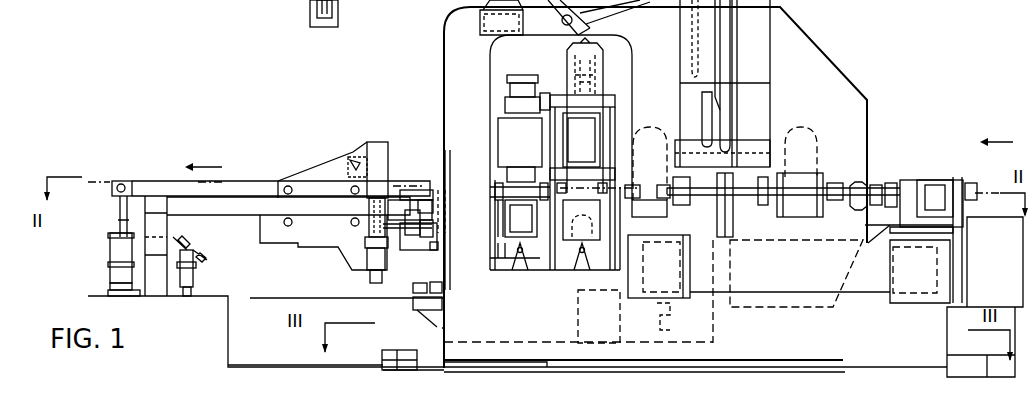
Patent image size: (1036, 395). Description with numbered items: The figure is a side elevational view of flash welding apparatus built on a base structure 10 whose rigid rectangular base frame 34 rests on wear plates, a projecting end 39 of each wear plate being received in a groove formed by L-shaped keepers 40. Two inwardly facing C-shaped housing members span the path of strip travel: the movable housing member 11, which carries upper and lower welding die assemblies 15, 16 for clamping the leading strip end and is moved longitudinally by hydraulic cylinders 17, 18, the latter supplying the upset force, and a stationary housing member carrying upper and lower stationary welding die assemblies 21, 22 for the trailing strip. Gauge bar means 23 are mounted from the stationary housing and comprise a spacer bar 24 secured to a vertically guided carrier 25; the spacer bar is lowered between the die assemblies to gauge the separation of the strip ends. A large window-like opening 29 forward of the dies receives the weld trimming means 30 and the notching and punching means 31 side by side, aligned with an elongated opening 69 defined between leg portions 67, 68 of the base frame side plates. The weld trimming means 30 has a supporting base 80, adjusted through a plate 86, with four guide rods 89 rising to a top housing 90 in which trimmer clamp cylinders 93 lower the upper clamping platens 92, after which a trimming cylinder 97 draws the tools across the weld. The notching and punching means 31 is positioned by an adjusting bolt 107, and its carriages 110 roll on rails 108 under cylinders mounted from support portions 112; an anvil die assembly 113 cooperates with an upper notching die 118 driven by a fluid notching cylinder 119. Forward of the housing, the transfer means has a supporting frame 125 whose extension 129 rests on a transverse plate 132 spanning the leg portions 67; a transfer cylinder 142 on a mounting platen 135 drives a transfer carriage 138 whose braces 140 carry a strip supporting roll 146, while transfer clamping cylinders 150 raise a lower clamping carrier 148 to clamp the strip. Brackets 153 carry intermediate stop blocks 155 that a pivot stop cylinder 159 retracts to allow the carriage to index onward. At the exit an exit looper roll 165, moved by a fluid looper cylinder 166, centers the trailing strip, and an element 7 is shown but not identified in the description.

The support plate 7 is at (722, 153).
The base structure 10 is at (498, 342).
The C-shaped housing member 11 is at (807, 42).
The upper welding die assembly 15 is at (750, 177).
The lower welding die assembly 16 is at (748, 203).
The hydraulic cylinders 17 is at (860, 195).
The hydraulic cylinders 18 is at (933, 180).
The upper stationary welding die assembly 21 is at (693, 167).
The lower stationary welding die assembly 22 is at (687, 180).
The gauge bar means 23 is at (745, 48).
The spacer bar 24 is at (720, 113).
The carrier 25 is at (705, 27).
The opening 29 is at (497, 72).
The weld trimming means 30 is at (616, 75).
The notching and punching means 31 is at (542, 82).
The base frame 34 is at (442, 330).
The projecting end 39 is at (397, 350).
The L-shaped keepers 40 is at (382, 360).
The leg portion 67 is at (455, 193).
The leg portion 68 is at (657, 223).
The elongated opening 69 is at (503, 240).
The supporting base 80 is at (603, 250).
The plate 86 is at (583, 252).
The guide rods 89 is at (610, 125).
The top housing 90 is at (597, 97).
The upper clamping platens 92 is at (613, 180).
The trimmer clamp cylinders 93 is at (607, 50).
The trimming cylinder 97 is at (568, 233).
The adjusting bolt 107 is at (521, 253).
The rails 108 is at (510, 279).
The carriages 110 is at (520, 213).
The support portions 112 is at (310, 8).
The anvil die assembly 113 is at (490, 191).
The upper notching die 118 is at (517, 177).
The fluid notching cylinder 119 is at (522, 77).
The supporting frame 125 is at (180, 195).
The extension 129 is at (428, 197).
The transverse plate 132 is at (490, 233).
The transfer cylinder mounting platen 135 is at (412, 243).
The transfer carriage 138 is at (317, 173).
The braces 140 is at (382, 142).
The transfer cylinder 142 is at (437, 278).
The strip supporting roll 146 is at (352, 153).
The lower clamping carrier 148 is at (367, 227).
The transfer clamping cylinders 150 is at (368, 248).
The brackets 153 is at (182, 247).
The intermediate stop blocks 155 is at (205, 255).
The pivot stop cylinder 159 is at (197, 277).
The exit looper roll 165 is at (118, 183).
The fluid looper cylinder 166 is at (112, 253).